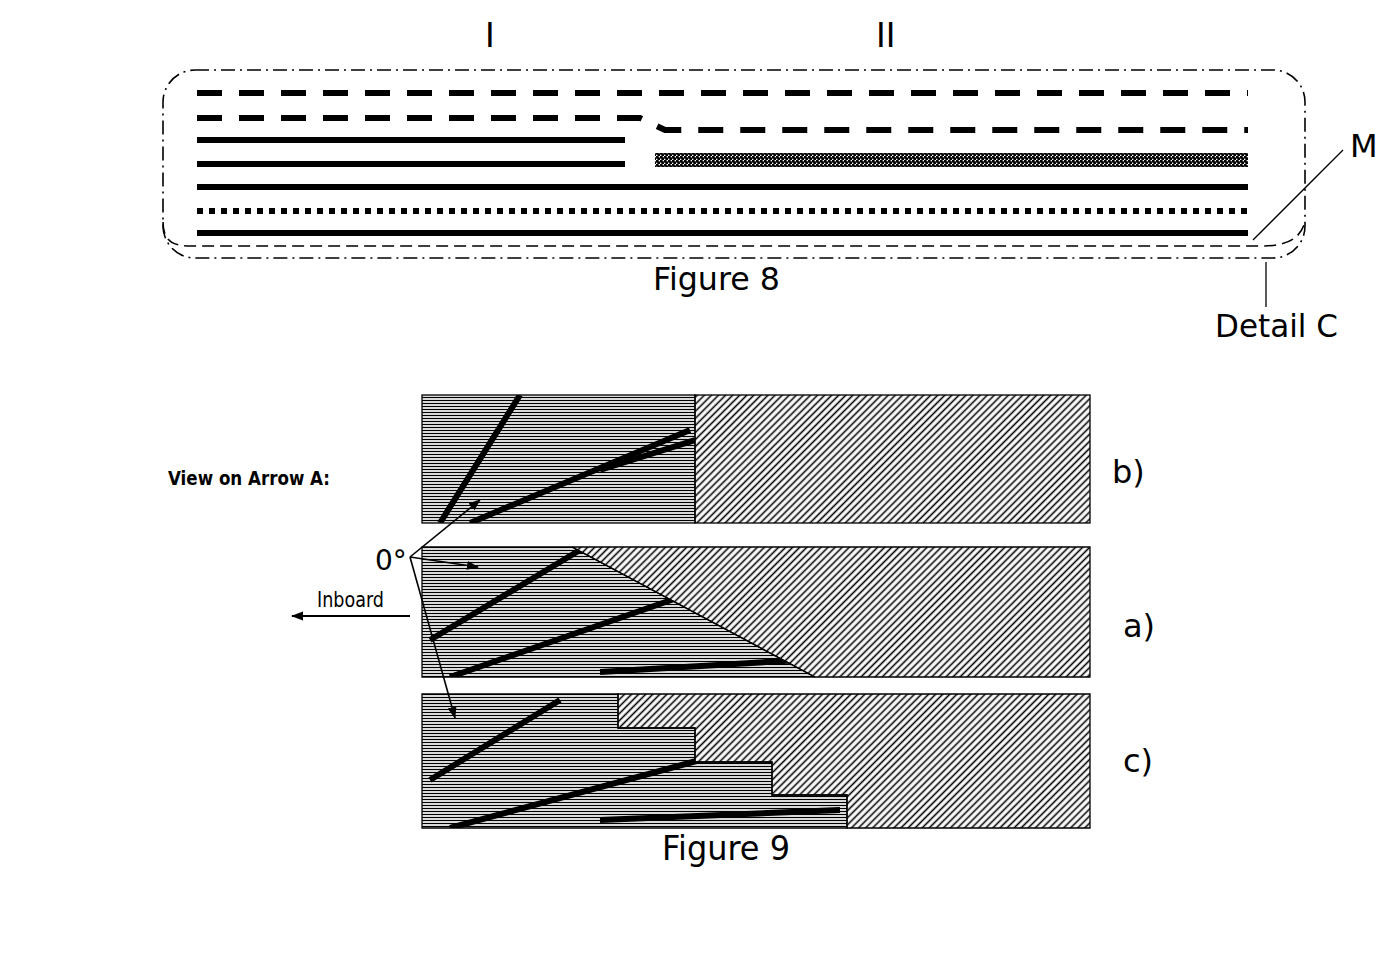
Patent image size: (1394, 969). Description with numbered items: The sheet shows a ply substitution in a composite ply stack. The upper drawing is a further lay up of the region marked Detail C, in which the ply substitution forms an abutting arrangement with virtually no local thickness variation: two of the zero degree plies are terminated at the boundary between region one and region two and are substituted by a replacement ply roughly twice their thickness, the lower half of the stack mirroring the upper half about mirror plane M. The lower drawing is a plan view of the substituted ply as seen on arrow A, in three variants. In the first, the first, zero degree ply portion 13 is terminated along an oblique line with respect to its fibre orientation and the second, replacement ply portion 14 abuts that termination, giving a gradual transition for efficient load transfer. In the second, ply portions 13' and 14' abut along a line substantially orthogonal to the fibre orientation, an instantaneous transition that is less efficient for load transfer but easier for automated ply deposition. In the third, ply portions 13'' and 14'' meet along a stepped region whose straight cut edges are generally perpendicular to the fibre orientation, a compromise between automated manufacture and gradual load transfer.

The first, 0 degree ply portion 13 is at (531, 622).
The 0 degree ply portion 13' is at (488, 452).
The ply portion 13'' is at (571, 774).
The second, replacement ply portion 14 is at (897, 602).
The replacement ply portion 14' is at (892, 414).
The replacement ply portion 14'' is at (908, 797).